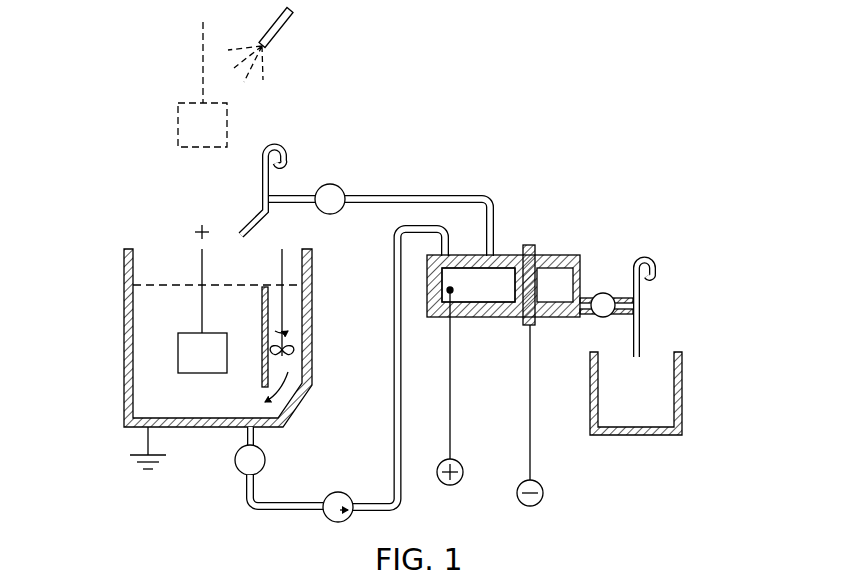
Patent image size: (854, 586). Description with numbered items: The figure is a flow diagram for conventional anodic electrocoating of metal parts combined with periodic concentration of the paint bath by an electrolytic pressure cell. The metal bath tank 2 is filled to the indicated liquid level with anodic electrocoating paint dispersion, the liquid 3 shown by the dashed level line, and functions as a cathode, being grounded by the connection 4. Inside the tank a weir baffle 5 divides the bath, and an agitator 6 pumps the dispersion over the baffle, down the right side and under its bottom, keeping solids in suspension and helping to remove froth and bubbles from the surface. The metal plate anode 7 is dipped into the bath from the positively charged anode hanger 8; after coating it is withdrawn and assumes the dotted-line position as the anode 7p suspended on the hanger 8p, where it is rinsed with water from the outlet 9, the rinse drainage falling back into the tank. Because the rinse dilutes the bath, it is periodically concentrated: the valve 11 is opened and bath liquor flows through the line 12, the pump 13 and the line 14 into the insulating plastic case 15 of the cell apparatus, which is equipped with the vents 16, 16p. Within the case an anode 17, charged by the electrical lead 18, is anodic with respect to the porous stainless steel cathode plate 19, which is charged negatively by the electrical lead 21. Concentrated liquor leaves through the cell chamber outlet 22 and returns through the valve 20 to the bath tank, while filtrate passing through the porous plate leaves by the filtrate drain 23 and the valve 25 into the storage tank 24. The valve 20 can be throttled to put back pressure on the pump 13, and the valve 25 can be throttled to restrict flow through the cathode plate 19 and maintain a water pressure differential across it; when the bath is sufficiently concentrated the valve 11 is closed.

The bath tank 2 is at (124, 366).
The electrolyte bath 3 is at (135, 313).
The grounding connection 4 is at (148, 441).
The weir baffle 5 is at (262, 308).
The agitator 6 is at (282, 267).
The metal plate anode 7 is at (178, 355).
The anode in withdrawn position 7p is at (178, 118).
The anode hanger 8 is at (202, 268).
The hanger in withdrawn position 8p is at (203, 48).
The rinse outlet 9 is at (284, 27).
The valve 11 is at (235, 463).
The line 12 is at (293, 497).
The pump 13 is at (350, 486).
The line 14 is at (393, 391).
The insulating plastic case 15 is at (470, 254).
The vent 16 is at (284, 161).
The vent 16p is at (654, 271).
The anode 17 is at (490, 276).
The electrical lead 18 is at (450, 390).
The porous stainless steel cathode plate 19 is at (531, 248).
The valve 20 is at (342, 190).
The electrical lead 21 is at (530, 413).
The cell chamber outlet 22 is at (432, 195).
The filtrate drain 23 is at (605, 293).
The storage tank 24 is at (683, 390).
The valve 25 is at (603, 318).